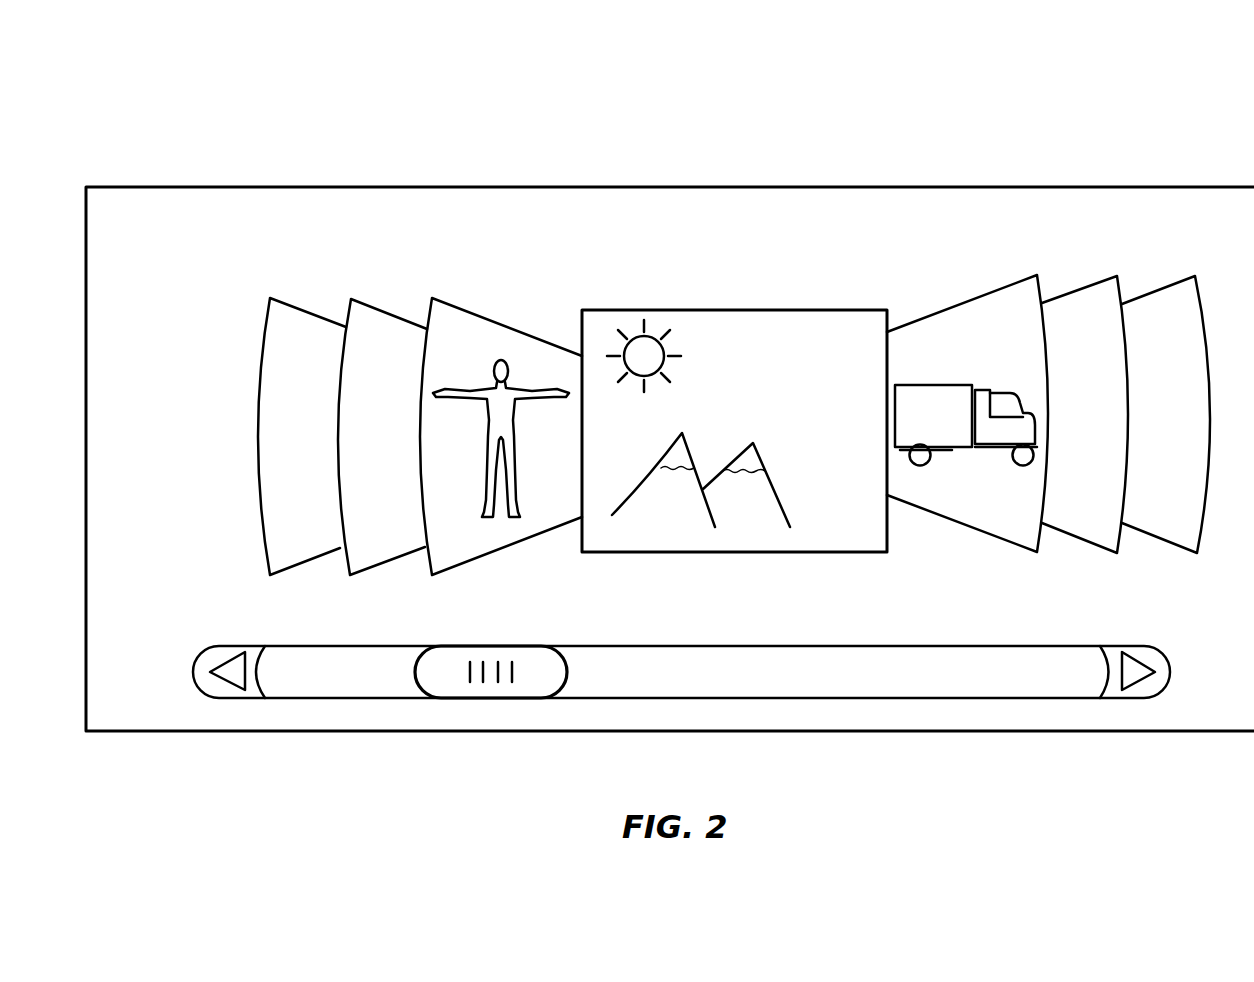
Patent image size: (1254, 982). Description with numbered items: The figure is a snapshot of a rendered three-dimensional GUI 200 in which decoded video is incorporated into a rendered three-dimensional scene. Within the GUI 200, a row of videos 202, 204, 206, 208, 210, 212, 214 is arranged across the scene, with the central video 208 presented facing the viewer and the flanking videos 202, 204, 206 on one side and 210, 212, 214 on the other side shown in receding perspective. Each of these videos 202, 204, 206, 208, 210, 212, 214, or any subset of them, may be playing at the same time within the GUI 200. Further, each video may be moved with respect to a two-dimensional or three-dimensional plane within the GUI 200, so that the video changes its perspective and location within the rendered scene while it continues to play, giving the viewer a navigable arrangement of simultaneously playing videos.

The rendered 3D GUI 200 is at (133, 123).
The video 202 is at (278, 297).
The video 204 is at (357, 300).
The video 206 is at (460, 308).
The video 208 is at (748, 310).
The video 210 is at (1008, 285).
The video 212 is at (1100, 280).
The video 214 is at (1192, 278).